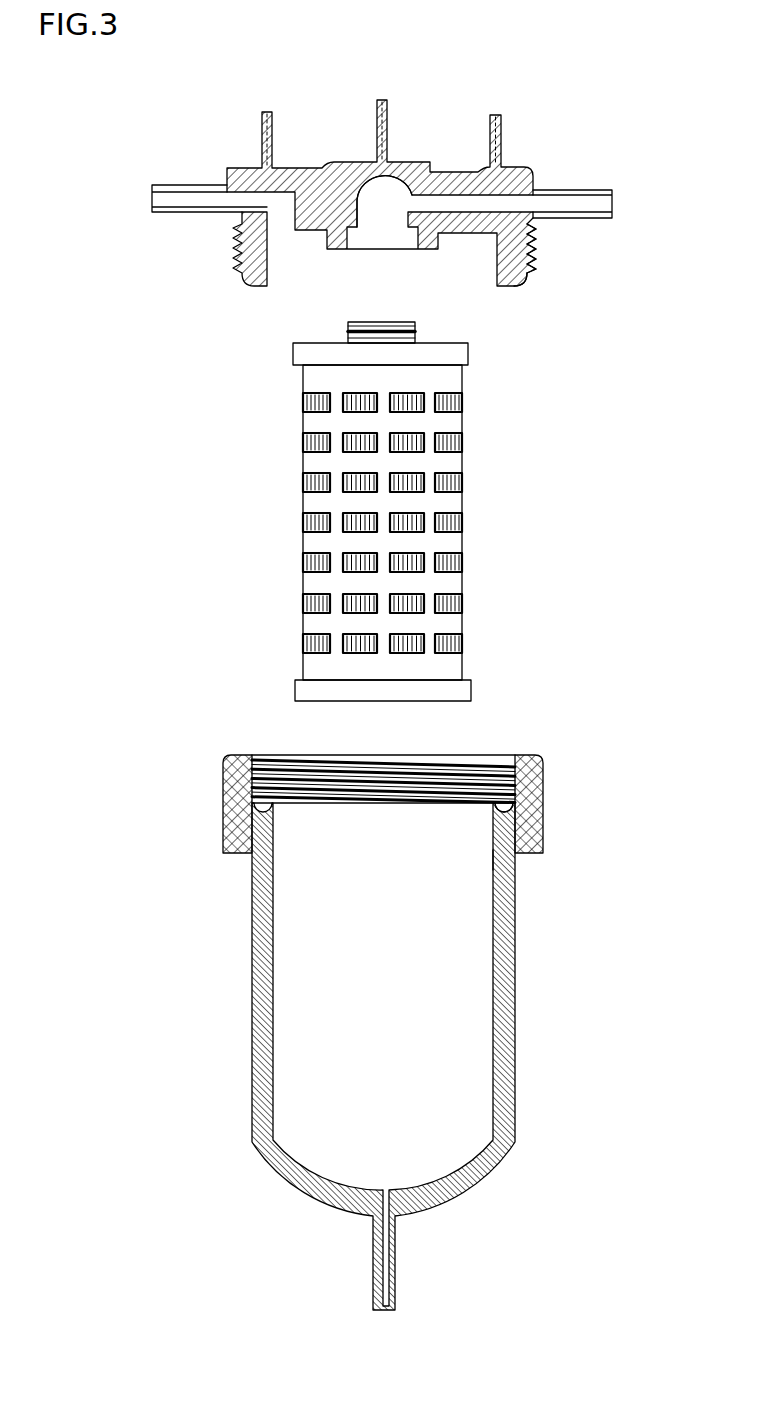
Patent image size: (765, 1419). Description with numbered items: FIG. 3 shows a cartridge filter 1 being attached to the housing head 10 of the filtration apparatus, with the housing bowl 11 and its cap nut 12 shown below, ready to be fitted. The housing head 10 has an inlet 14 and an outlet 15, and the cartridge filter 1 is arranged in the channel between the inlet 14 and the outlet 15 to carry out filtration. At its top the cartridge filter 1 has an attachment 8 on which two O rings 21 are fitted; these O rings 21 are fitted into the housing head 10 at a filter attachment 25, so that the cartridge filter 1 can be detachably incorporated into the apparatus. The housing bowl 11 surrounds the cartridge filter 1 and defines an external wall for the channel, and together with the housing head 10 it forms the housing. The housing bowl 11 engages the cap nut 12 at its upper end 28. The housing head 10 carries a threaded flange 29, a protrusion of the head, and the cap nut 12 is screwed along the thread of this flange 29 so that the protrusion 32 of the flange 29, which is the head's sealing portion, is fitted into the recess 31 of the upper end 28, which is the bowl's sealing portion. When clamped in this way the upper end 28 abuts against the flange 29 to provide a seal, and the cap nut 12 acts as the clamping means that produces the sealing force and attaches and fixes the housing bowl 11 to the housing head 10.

The cartridge filter 1 is at (408, 497).
The attachment 8 is at (352, 322).
The housing head 10 is at (419, 113).
The housing bowl 11 is at (416, 1032).
The cap nut 12 is at (543, 843).
The inlet 14 is at (152, 199).
The outlet 15 is at (612, 205).
The O ring 21 is at (415, 331).
The filter attachment 25 is at (412, 232).
The upper end 28 is at (493, 857).
The flange 29 is at (530, 261).
The recess 31 is at (493, 829).
The protrusion 32 is at (516, 287).